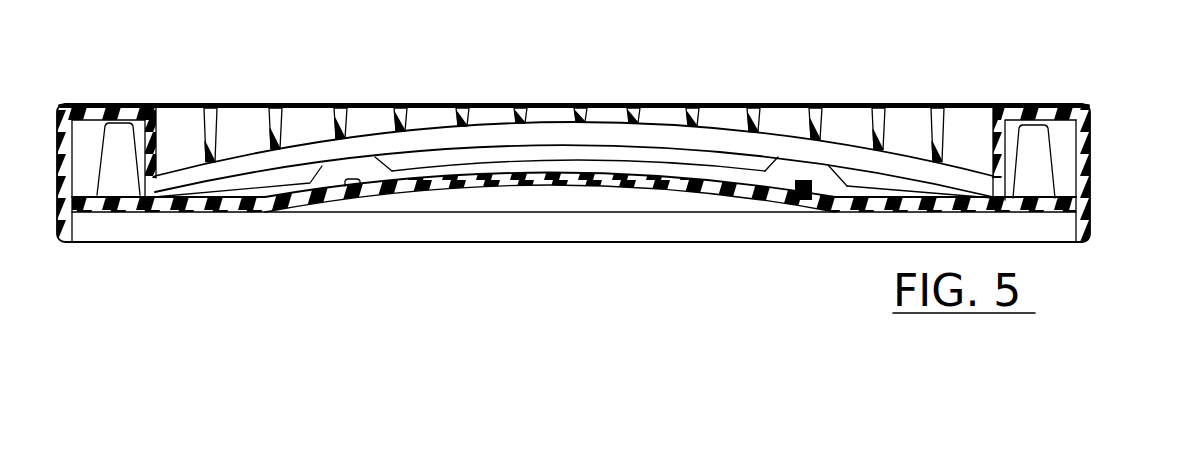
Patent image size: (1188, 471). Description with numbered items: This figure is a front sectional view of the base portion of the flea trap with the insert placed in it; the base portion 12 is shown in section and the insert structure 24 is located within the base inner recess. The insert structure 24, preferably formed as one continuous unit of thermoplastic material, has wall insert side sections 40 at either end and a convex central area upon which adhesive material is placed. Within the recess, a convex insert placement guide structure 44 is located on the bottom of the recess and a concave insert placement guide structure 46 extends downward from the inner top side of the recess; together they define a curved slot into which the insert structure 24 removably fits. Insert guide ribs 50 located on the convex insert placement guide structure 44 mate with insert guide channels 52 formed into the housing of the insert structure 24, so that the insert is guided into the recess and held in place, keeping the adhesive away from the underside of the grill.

The base housing 12 is at (1046, 246).
The insert structure 24 is at (568, 160).
The wall insert side sections 40 is at (85, 130).
The convex insert placement guide structure 44 is at (556, 188).
The concave insert placement guide structure 46 is at (592, 118).
The insert guide ribs 50 is at (354, 186).
The insert guide channels 52 is at (360, 165).